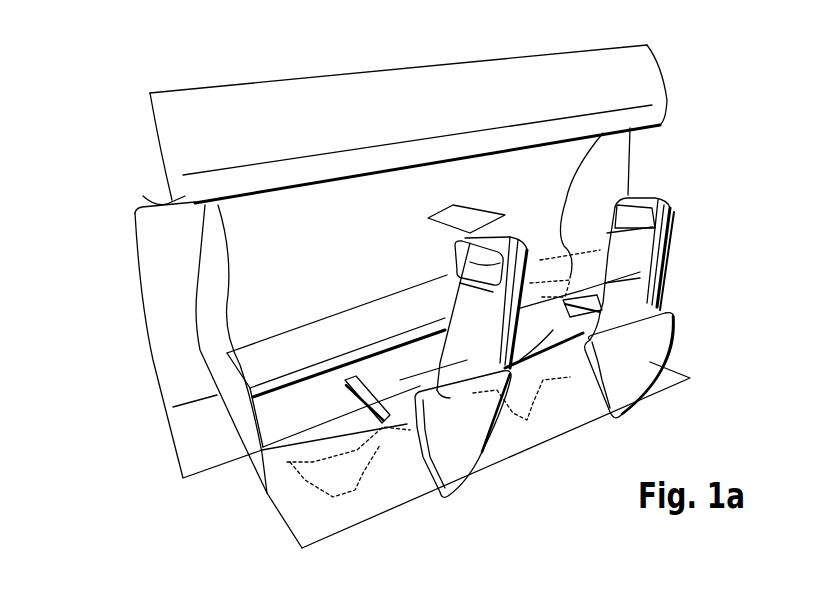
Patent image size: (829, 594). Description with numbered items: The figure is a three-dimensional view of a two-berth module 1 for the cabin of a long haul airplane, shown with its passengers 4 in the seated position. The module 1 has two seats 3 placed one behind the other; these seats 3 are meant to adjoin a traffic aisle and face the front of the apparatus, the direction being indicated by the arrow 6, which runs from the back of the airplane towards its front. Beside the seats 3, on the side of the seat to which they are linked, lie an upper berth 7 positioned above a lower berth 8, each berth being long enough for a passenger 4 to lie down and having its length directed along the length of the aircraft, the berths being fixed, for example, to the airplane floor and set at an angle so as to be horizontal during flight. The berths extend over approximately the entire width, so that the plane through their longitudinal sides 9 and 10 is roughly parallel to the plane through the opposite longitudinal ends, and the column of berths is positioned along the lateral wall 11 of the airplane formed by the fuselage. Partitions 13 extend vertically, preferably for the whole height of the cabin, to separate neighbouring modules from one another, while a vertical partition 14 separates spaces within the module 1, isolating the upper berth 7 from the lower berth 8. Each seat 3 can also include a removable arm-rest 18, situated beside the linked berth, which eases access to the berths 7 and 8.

The module 1 is at (232, 57).
The seat 3 is at (462, 447).
The passenger 4 is at (498, 210).
The arrow 6 is at (58, 433).
The upper berth 7 is at (258, 352).
The lower berth 8 is at (357, 397).
The longitudinal side 9 is at (370, 300).
The longitudinal side 10 is at (259, 353).
The lateral wall 11 is at (284, 272).
The partition 13 is at (213, 237).
The vertical partition 14 is at (460, 205).
The removable arm-rest 18 is at (650, 283).